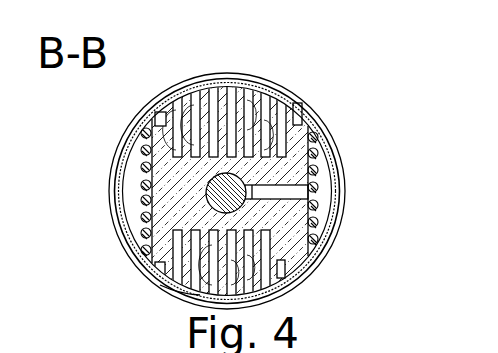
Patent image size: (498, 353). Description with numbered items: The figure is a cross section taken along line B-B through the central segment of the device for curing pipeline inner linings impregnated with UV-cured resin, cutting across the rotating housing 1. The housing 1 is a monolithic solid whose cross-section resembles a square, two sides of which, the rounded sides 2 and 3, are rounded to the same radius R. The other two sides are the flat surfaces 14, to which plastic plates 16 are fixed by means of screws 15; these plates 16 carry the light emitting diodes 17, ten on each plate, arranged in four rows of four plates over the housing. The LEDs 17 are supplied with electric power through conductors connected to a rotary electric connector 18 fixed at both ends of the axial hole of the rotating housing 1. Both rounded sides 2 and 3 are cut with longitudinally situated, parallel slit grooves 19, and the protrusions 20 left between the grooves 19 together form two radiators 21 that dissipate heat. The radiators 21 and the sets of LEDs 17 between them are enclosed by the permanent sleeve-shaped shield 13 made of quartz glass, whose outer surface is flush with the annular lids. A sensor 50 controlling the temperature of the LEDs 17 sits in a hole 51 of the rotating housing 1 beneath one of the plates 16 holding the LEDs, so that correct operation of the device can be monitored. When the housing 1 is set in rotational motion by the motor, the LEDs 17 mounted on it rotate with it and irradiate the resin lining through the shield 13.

The rotating housing 1 is at (275, 158).
The rounded side 2 is at (250, 87).
The rounded side 3 is at (303, 281).
The sleeve-shaped shield 13 is at (169, 93).
The flat surface 14 is at (150, 122).
The screw 15 is at (154, 319).
The plastic plate 16 is at (144, 264).
The light emitting diode 17 is at (138, 170).
The rotary electric connector 18 is at (311, 150).
The slit groove 19 is at (212, 94).
The protrusion 20 is at (259, 105).
The radiator 21 is at (268, 99).
The sensor 50 is at (275, 197).
The hole 51 is at (421, 270).
The radius R is at (228, 190).